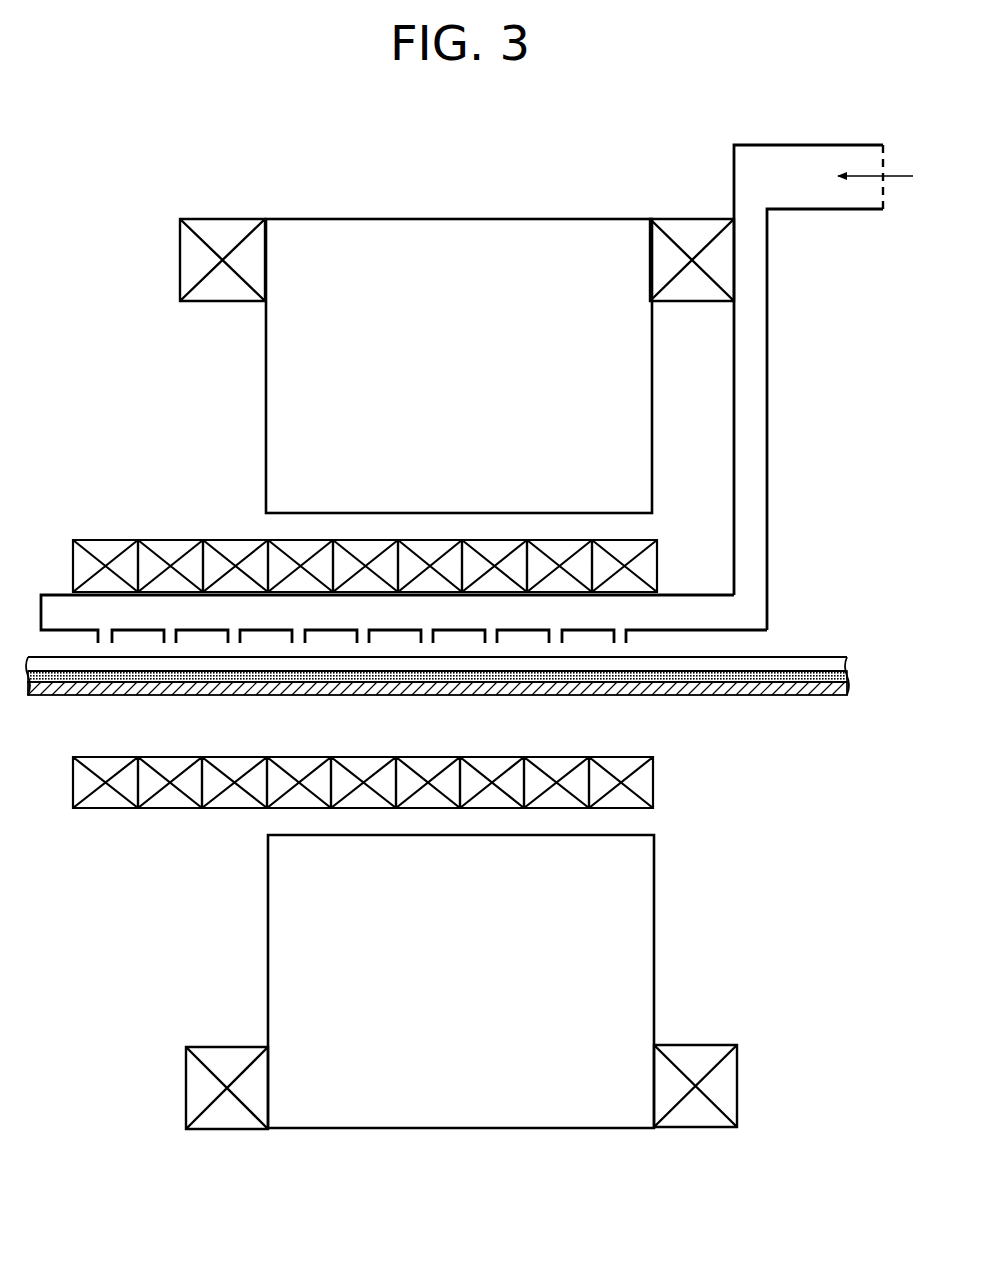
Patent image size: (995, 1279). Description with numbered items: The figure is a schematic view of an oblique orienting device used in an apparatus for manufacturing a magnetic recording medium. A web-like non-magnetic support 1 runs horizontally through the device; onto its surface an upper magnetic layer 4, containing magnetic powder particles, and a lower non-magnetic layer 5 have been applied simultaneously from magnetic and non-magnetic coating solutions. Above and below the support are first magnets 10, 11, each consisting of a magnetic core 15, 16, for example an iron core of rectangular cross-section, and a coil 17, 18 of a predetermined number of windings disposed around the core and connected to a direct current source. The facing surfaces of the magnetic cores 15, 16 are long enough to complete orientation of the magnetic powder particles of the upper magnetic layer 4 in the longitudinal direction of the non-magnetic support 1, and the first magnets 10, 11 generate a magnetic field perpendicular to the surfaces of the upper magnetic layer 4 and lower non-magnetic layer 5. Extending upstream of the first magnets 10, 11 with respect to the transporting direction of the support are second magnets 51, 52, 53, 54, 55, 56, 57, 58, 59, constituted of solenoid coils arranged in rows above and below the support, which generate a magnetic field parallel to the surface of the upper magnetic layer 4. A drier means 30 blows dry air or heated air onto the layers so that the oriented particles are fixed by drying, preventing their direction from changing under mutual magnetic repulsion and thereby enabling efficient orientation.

The non-magnetic support 1 is at (451, 659).
The upper magnetic layer 4 is at (803, 682).
The lower non-magnetic layer 5 is at (832, 665).
The first magnet 10 is at (566, 191).
The first magnet 11 is at (676, 919).
The magnetic core 15 is at (378, 243).
The magnetic core 16 is at (635, 980).
The coil 17 is at (225, 238).
The coil 18 is at (230, 1053).
The drier means 30 is at (778, 371).
The second magnet 51 is at (98, 547).
The second magnet 52 is at (165, 550).
The second magnet 53 is at (232, 547).
The second magnet 54 is at (300, 540).
The second magnet 55 is at (360, 540).
The second magnet 56 is at (426, 540).
The second magnet 57 is at (495, 545).
The second magnet 58 is at (560, 545).
The second magnet 59 is at (640, 561).